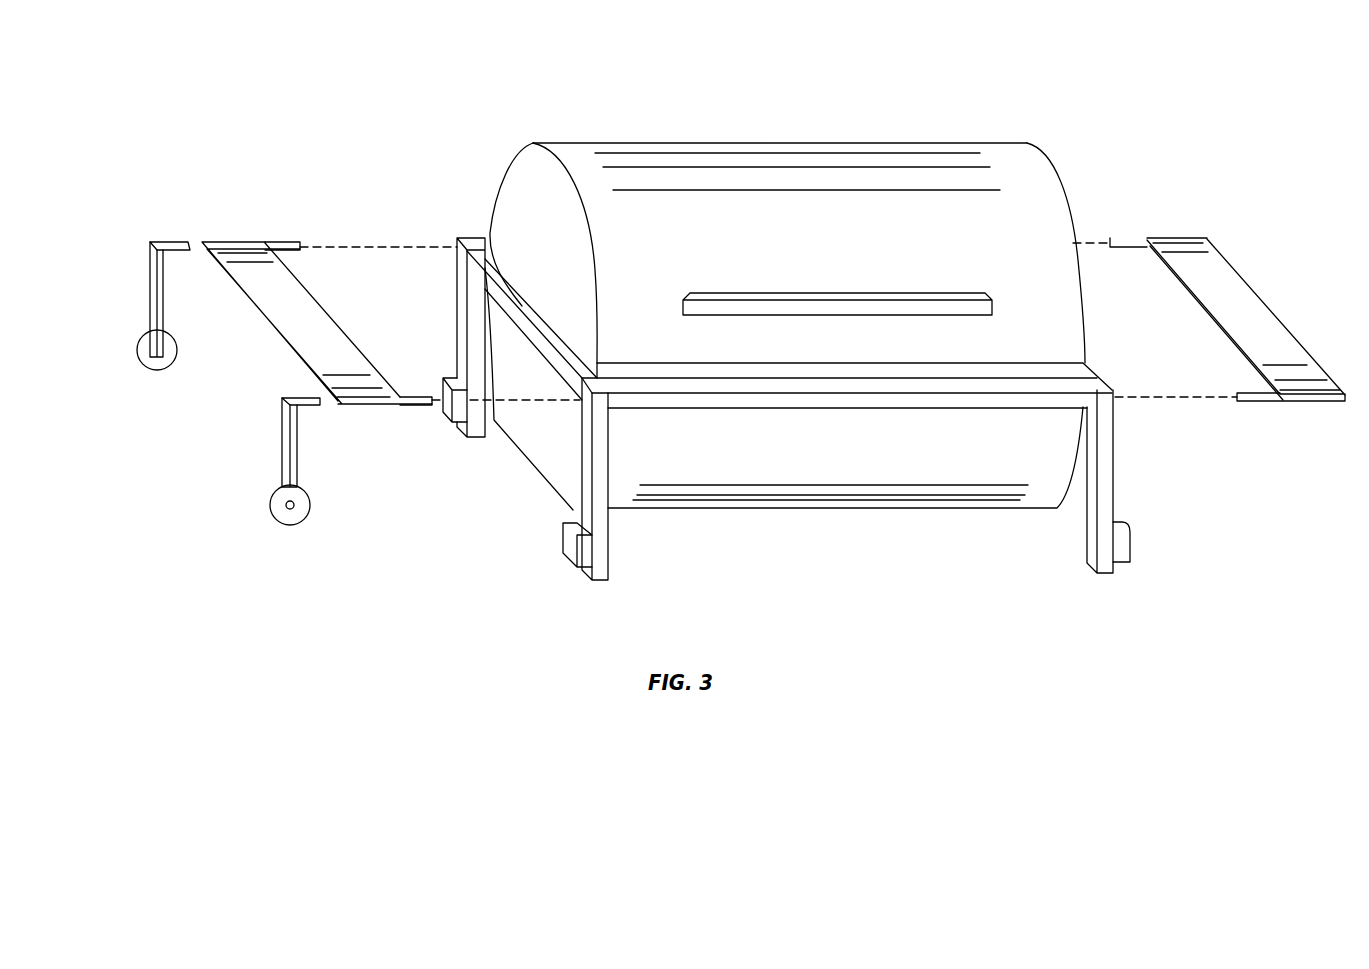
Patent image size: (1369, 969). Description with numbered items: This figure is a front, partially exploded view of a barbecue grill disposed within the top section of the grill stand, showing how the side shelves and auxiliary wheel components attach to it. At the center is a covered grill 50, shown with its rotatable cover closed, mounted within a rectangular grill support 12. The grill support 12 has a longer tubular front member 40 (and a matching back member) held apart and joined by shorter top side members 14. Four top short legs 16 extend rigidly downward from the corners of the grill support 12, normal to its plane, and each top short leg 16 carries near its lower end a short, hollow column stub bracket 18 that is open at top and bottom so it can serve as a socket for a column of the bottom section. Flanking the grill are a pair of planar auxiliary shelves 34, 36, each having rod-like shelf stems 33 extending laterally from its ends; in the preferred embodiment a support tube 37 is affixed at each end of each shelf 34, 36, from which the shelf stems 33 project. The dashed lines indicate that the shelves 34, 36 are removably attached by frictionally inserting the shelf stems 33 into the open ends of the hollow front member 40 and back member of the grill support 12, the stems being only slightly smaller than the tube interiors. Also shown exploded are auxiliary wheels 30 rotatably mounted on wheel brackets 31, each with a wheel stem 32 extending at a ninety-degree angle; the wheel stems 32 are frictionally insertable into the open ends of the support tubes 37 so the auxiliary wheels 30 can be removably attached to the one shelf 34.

The grill support 12 is at (1090, 368).
The top side members 14 is at (490, 235).
The top short legs 16 is at (463, 322).
The column stub bracket 18 is at (446, 388).
The auxiliary wheels 30 is at (142, 347).
The wheel bracket 31 is at (152, 293).
The wheel stems 32 is at (172, 243).
The shelf stems 33 is at (292, 251).
The auxiliary shelf 34 is at (317, 325).
The auxiliary shelf 36 is at (1254, 312).
The support tube 37 is at (224, 236).
The front member 40 is at (802, 400).
The covered grill 50 is at (573, 152).